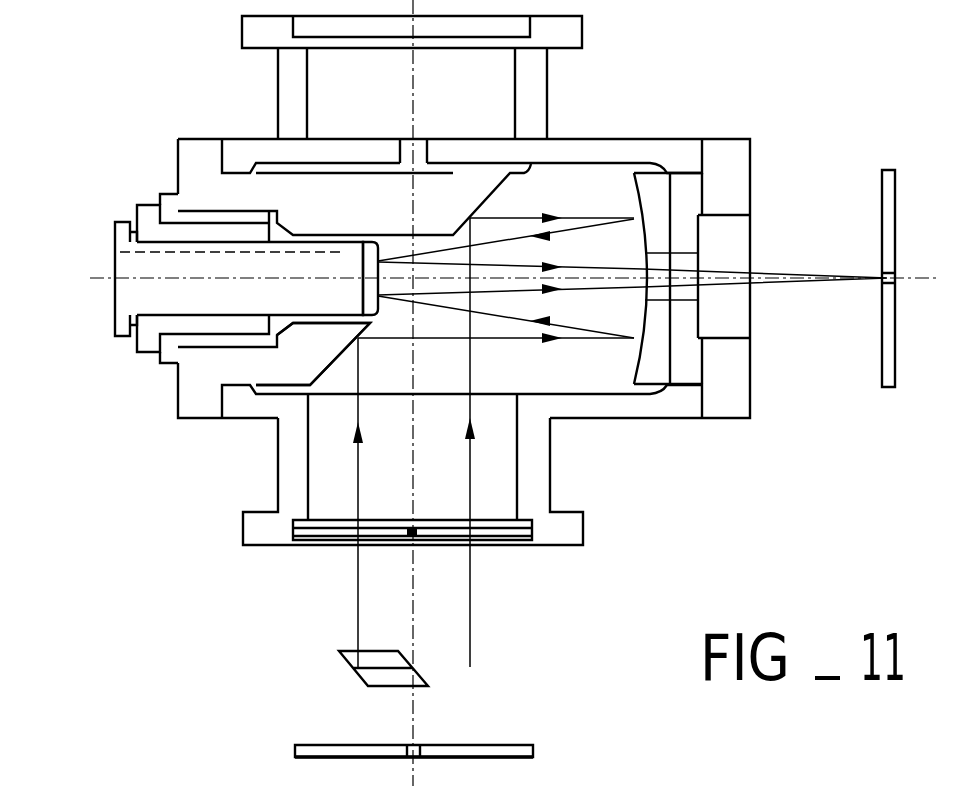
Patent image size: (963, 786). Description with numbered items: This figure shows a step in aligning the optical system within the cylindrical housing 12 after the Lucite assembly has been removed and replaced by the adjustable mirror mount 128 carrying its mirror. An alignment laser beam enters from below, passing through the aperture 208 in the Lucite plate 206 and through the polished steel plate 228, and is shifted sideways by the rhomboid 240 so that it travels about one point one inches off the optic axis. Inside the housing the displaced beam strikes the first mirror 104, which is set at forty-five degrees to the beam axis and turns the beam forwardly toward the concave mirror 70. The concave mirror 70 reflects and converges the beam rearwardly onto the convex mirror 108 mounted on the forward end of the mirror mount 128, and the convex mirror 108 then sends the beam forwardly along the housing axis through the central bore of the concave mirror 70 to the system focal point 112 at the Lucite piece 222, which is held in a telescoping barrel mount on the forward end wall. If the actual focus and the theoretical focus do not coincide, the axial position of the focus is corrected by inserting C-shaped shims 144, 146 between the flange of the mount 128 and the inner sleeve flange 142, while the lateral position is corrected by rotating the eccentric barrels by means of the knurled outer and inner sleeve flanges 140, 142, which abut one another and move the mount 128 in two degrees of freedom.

The cylindrical housing 12 is at (599, 139).
The concave mirror 70 is at (648, 172).
The first mirror 104 is at (332, 371).
The convex mirror 108 is at (380, 252).
The point of focus 112 is at (882, 280).
The adjustable mirror mount 128 is at (312, 247).
The outer sleeve flange 140 is at (168, 195).
The inner sleeve flange 142 is at (143, 204).
The shim 144 is at (132, 228).
The shim 146 is at (137, 327).
The Lucite plate 206 is at (530, 747).
The aperture 208 is at (413, 748).
The Lucite piece 222 is at (882, 368).
The polished steel plate 228 is at (502, 538).
The rhomboid 240 is at (365, 683).